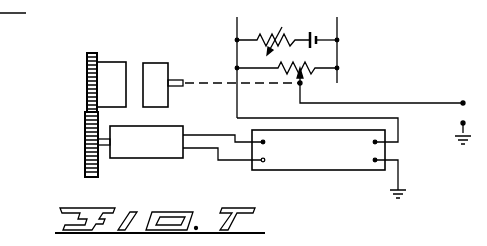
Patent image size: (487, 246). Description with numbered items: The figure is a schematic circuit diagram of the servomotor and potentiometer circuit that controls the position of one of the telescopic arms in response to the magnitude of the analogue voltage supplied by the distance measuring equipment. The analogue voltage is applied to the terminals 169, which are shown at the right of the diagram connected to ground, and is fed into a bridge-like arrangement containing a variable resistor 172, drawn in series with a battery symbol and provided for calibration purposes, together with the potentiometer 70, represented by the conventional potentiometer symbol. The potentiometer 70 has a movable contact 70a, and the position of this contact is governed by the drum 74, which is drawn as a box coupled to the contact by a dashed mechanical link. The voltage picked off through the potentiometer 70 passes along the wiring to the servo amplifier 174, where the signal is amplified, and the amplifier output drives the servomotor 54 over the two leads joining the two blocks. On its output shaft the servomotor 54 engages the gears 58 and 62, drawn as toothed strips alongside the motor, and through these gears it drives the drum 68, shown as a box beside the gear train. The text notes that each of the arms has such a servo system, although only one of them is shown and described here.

The servomotor 54 is at (148, 159).
The gear 58 is at (85, 141).
The gear 62 is at (87, 80).
The drum 68 is at (107, 72).
The potentiometer 70 is at (305, 64).
The movable contact 70a is at (306, 86).
The drum 74 is at (152, 72).
The terminals 169 is at (456, 110).
The variable resistor 172 is at (278, 27).
The servo amplifier 174 is at (335, 170).